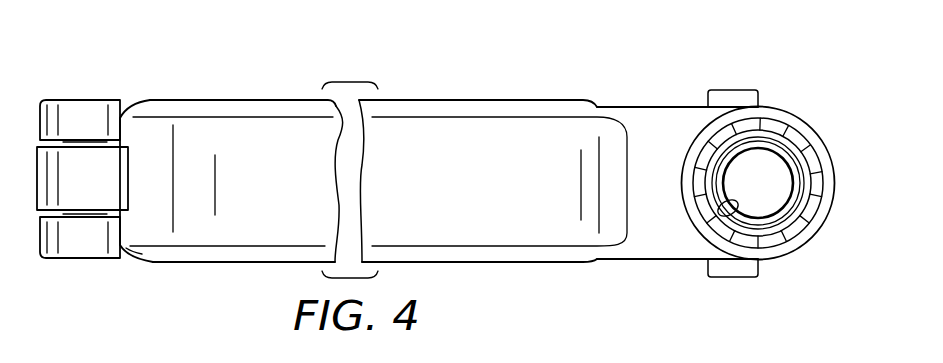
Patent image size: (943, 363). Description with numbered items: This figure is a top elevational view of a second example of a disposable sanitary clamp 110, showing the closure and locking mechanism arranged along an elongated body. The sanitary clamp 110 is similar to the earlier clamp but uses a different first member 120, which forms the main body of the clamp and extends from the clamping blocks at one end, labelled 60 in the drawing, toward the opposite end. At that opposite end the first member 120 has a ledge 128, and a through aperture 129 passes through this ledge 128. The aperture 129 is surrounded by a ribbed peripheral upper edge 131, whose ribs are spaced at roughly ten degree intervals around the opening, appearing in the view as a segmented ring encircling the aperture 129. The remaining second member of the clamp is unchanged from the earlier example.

The sanitary clamp 110 is at (161, 73).
The clamp 60 is at (68, 258).
The first member 120 is at (257, 97).
The ledge 128 is at (648, 105).
The through aperture 129 is at (707, 210).
The ribbed peripheral upper edge 131 is at (775, 125).